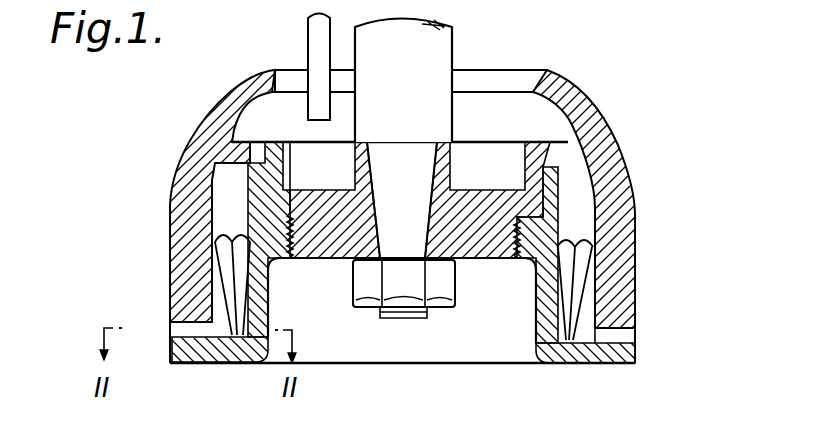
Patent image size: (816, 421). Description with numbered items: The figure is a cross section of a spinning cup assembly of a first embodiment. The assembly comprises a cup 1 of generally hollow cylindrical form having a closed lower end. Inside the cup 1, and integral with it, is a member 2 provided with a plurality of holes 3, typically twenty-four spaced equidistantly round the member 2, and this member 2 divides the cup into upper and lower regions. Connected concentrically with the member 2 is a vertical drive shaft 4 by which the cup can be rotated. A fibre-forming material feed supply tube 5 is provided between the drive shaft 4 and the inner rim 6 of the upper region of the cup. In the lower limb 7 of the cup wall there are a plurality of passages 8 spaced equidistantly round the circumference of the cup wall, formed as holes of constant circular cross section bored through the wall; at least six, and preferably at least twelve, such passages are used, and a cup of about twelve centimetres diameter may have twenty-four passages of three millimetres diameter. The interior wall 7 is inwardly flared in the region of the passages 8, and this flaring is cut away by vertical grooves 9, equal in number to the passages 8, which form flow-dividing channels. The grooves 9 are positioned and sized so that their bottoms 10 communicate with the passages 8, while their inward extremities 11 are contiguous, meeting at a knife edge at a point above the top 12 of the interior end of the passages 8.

The cup 1 is at (172, 208).
The member 2 is at (527, 139).
The holes 3 is at (268, 141).
The vertical drive shaft 4 is at (456, 46).
The fibre-forming material feed supply tube 5 is at (306, 34).
The inner rim 6 is at (534, 76).
The lower limb of the cup wall 7 is at (597, 216).
The passages 8 is at (628, 333).
The vertical grooves 9 is at (218, 300).
The bottoms of the grooves 10 is at (207, 321).
The inward extremities of the grooves 11 is at (573, 315).
The top of the interior end of the passages 12 is at (586, 345).